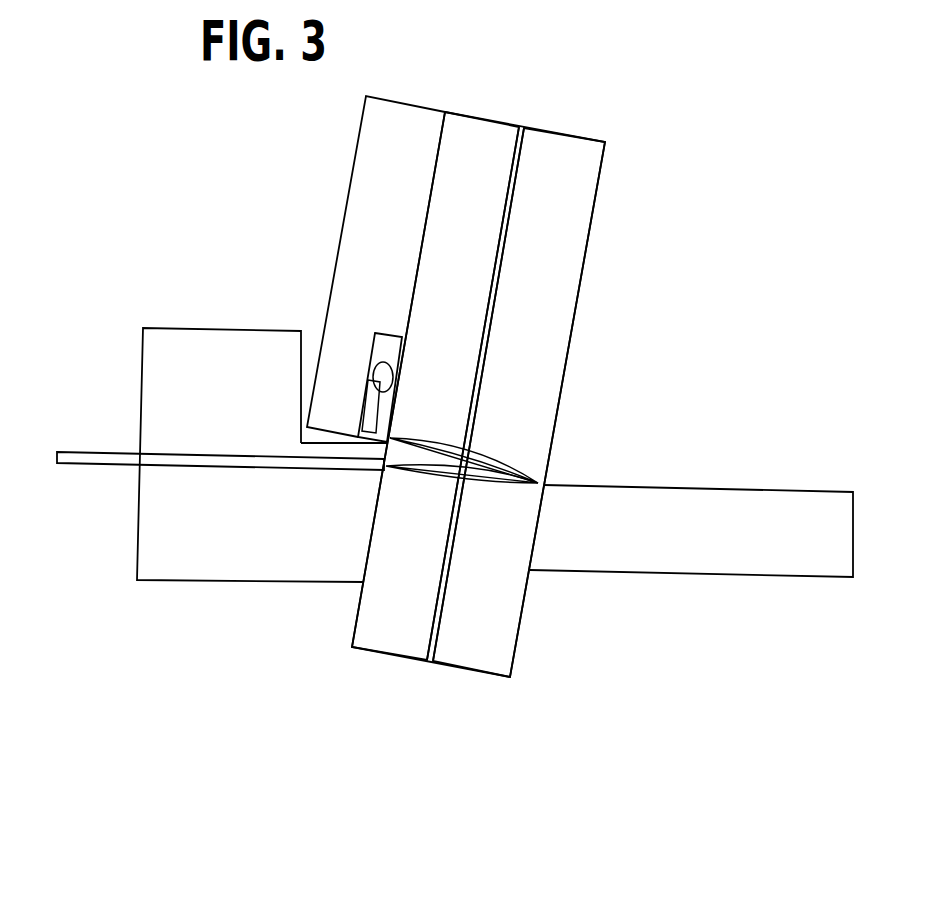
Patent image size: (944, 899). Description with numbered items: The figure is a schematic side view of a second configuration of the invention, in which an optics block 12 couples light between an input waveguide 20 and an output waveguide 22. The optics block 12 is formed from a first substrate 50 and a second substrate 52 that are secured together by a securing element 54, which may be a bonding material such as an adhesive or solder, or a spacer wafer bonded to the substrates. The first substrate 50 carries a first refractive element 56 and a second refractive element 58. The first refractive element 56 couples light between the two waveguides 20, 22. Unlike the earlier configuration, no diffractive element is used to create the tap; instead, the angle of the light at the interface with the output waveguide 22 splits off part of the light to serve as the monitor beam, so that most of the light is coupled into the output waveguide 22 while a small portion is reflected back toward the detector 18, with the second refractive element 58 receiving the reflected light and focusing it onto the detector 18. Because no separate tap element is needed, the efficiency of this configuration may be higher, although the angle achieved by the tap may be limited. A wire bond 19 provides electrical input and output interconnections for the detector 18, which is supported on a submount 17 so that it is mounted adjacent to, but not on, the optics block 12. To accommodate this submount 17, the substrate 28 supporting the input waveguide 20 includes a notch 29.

The optics block 12 is at (589, 102).
The submount 17 is at (355, 147).
The detector 18 is at (372, 335).
The wire bond 19 is at (392, 366).
The input waveguide 20 is at (100, 450).
The output waveguide 22 is at (788, 483).
The substrate 28 is at (213, 583).
The notch 29 is at (314, 345).
The first substrate 50 is at (497, 120).
The second substrate 52 is at (597, 136).
The securing element 54 is at (522, 123).
The first refractive element 56 is at (467, 477).
The second refractive element 58 is at (468, 461).